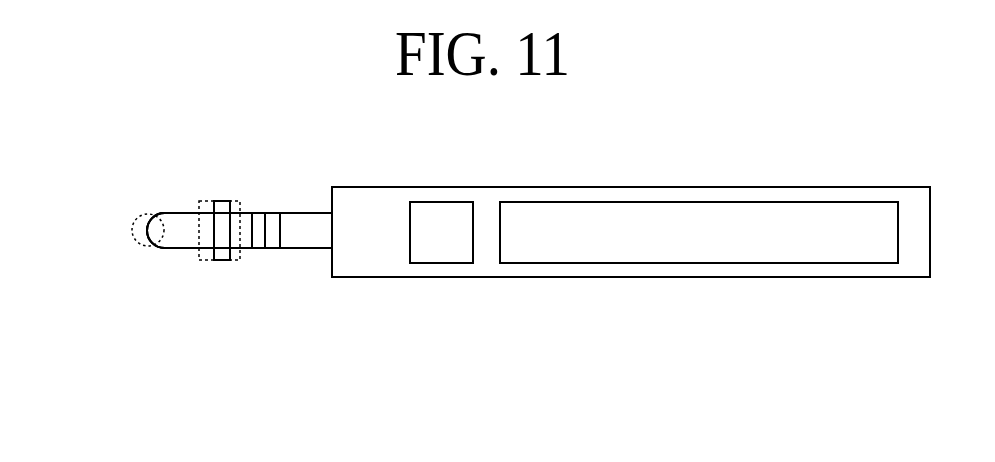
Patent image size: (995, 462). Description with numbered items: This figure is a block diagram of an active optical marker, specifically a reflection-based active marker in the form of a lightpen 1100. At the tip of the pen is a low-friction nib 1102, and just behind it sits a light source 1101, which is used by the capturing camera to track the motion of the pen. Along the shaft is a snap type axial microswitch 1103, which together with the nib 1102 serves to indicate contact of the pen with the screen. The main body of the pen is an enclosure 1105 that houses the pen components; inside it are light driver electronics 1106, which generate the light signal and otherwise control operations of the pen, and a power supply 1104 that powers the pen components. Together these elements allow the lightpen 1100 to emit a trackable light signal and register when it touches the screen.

The lightpen 1100 is at (737, 93).
The light source 1101 is at (187, 233).
The low-friction nib 1102 is at (147, 229).
The snap type axial microswitch 1103 is at (301, 232).
The power supply 1104 is at (712, 227).
The enclosure 1105 is at (685, 187).
The light driver electronics 1106 is at (442, 227).